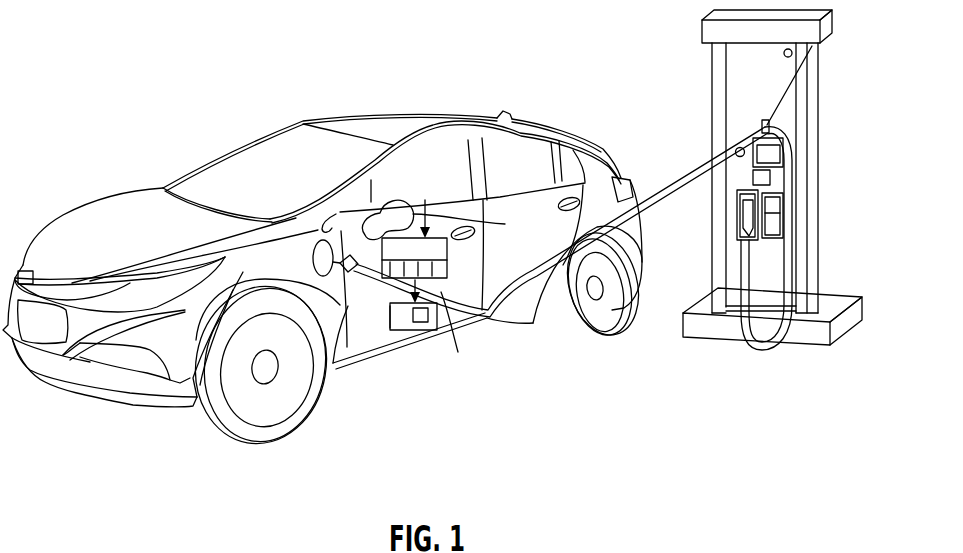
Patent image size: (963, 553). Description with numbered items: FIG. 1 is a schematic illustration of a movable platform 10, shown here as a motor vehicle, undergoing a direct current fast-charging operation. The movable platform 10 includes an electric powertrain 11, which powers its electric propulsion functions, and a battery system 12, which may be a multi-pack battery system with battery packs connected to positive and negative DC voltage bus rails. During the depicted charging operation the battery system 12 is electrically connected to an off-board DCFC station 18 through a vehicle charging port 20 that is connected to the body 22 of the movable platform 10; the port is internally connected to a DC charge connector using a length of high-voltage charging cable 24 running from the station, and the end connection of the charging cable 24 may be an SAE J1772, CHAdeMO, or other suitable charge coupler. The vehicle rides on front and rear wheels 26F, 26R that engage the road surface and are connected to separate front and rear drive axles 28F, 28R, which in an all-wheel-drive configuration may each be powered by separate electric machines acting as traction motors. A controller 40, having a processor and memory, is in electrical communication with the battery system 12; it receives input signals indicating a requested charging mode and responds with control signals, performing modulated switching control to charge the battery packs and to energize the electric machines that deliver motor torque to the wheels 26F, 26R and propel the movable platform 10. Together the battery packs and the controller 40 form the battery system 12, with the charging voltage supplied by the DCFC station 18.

The movable platform 10 is at (554, 88).
The electric powertrain 11 is at (389, 316).
The battery system 12 is at (419, 330).
The off-board DCFC station 18 is at (822, 130).
The vehicle charging port 20 is at (312, 261).
The body 22 is at (113, 197).
The high-voltage charging cable 24 is at (688, 170).
The front wheels 26F is at (262, 446).
The rear wheels 26R is at (572, 332).
The front drive axle 28F is at (268, 369).
The rear drive axle 28R is at (605, 292).
The controller 40 is at (448, 247).